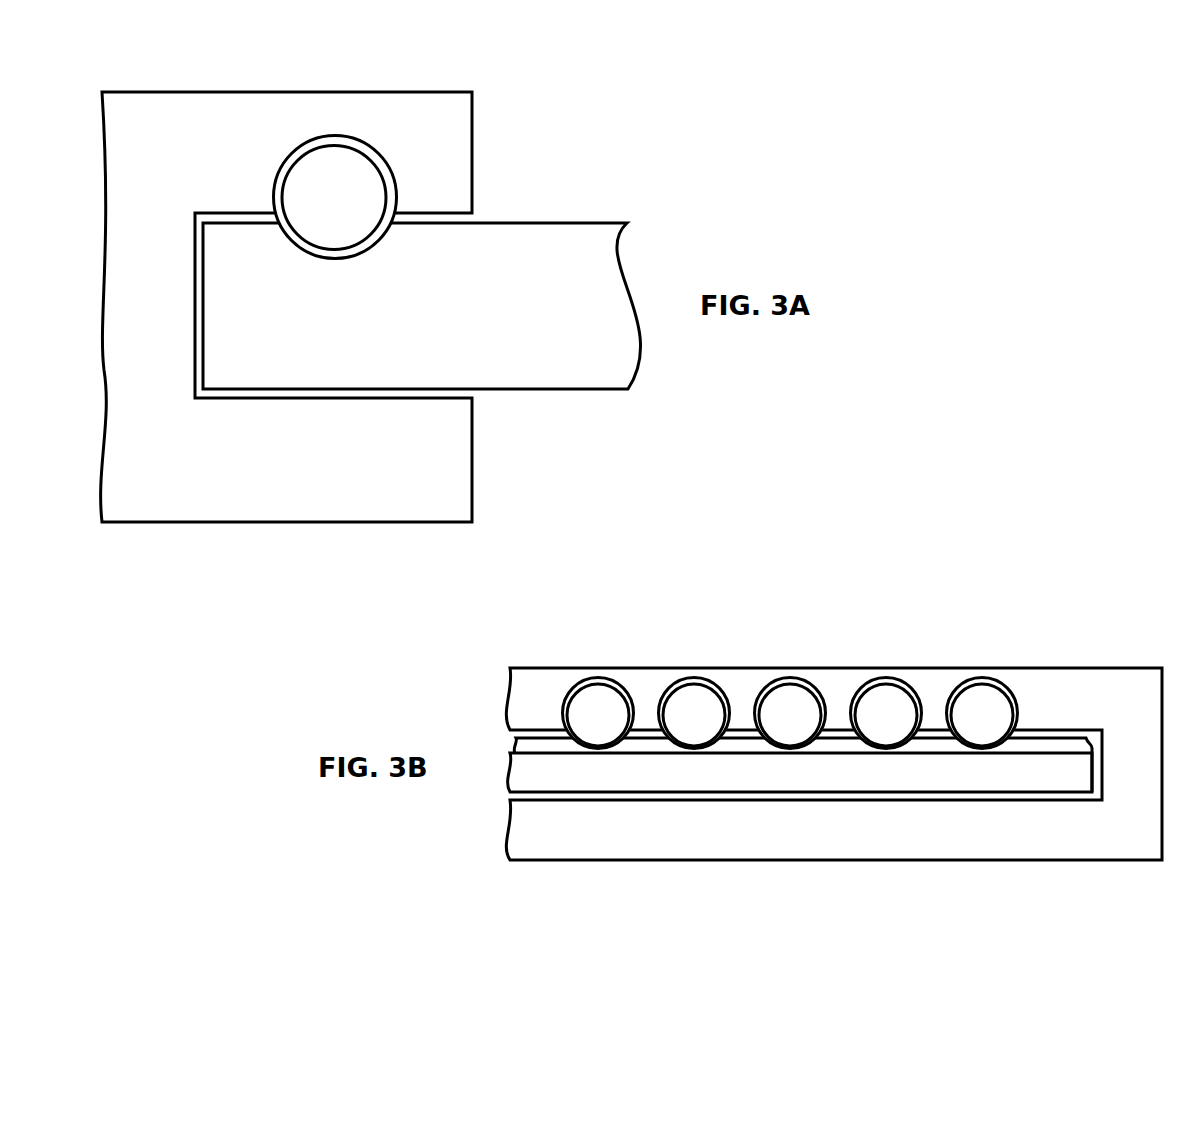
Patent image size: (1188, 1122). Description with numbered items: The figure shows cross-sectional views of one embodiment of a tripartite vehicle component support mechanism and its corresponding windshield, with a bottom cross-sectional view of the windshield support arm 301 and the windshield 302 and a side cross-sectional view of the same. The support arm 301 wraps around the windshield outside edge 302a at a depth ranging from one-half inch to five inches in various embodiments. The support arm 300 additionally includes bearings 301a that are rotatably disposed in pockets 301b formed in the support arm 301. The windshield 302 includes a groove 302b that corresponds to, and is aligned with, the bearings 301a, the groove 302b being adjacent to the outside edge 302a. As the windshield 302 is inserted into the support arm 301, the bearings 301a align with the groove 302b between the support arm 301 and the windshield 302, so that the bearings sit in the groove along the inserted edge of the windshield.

In FIG. 3A, the support arm 300 is at (755, 176).
In FIG. 3B, the support arm 300 is at (869, 570).
In FIG. 3A, the windshield support arm 301 is at (188, 156).
In FIG. 3B, the windshield support arm 301 is at (737, 839).
In FIG. 3A, the bearings 301a is at (357, 211).
In FIG. 3B, the bearings 301a is at (721, 722).
In FIG. 3A, the pockets 301b is at (372, 143).
In FIG. 3B, the pockets 301b is at (711, 679).
In FIG. 3A, the windshield 302 is at (434, 317).
In FIG. 3B, the windshield 302 is at (782, 784).
In FIG. 3A, the windshield outside edge 302a is at (300, 339).
In FIG. 3A, the groove 302b is at (386, 238).
In FIG. 3B, the groove 302b is at (920, 755).